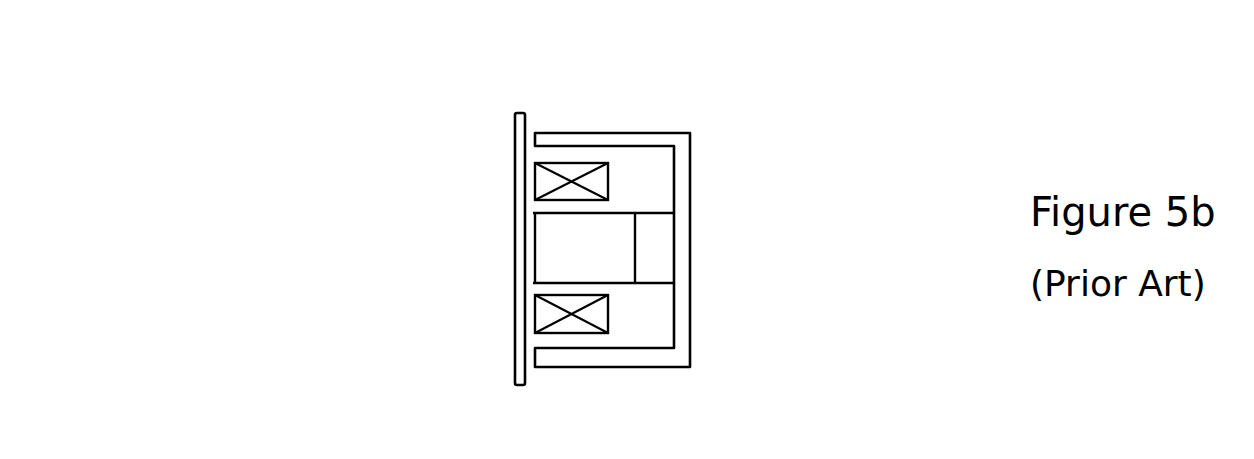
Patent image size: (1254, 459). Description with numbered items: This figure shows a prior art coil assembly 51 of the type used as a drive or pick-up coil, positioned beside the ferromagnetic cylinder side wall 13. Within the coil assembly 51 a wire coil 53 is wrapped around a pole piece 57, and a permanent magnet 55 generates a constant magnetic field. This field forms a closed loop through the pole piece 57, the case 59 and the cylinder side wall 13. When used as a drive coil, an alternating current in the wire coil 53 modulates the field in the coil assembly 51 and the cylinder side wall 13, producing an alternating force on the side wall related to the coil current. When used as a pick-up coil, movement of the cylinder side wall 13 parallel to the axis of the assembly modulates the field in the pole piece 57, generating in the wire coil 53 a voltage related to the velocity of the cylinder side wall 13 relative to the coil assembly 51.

The cylinder side wall 13 is at (515, 258).
The coil assembly 51 is at (727, 107).
The wire coil 53 is at (575, 168).
The permanent magnet 55 is at (663, 240).
The pole piece 57 is at (615, 272).
The case 59 is at (683, 303).